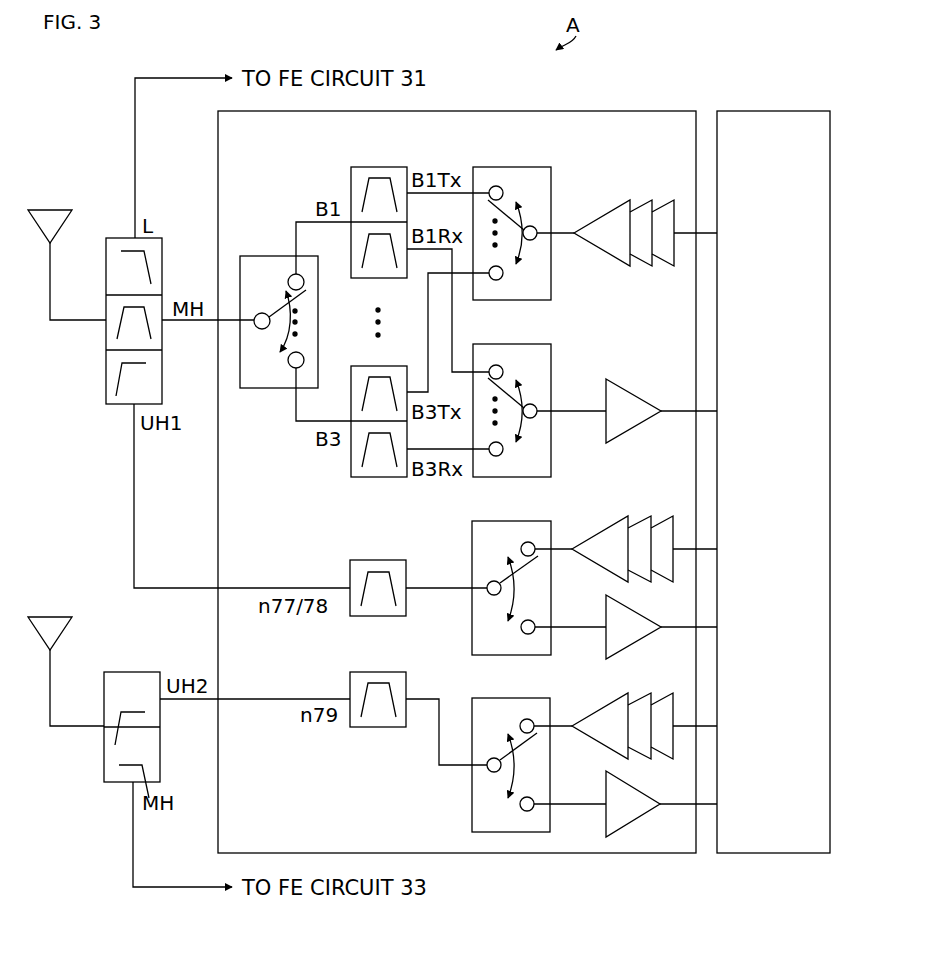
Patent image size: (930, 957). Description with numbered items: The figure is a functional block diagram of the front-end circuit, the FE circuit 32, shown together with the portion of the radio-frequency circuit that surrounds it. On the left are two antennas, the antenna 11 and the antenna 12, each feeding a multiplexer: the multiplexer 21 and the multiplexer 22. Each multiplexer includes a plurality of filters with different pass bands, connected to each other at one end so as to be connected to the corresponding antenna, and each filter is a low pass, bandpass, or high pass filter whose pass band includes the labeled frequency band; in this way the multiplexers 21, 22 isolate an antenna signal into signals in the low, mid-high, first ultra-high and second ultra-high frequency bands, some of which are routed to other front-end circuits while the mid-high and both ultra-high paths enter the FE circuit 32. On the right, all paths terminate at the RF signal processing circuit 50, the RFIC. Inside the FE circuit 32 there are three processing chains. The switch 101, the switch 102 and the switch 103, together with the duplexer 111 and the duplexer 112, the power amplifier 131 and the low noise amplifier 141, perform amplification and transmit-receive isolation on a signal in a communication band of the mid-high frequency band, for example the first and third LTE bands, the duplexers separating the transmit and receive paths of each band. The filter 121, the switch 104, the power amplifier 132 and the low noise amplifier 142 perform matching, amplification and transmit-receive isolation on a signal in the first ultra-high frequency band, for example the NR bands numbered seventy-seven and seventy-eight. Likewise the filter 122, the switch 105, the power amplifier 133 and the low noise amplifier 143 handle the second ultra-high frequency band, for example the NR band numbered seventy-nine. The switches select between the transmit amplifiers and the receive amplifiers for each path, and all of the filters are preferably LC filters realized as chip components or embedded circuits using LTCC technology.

The antenna 11 is at (48, 209).
The antenna 12 is at (48, 614).
The multiplexer 21 is at (158, 238).
The multiplexer 22 is at (124, 672).
The FE circuit 32 is at (632, 111).
The RF signal processing circuit 50 is at (764, 111).
The switch 101 is at (263, 256).
The switch 102 is at (502, 167).
The switch 103 is at (502, 344).
The switch 104 is at (502, 521).
The switch 105 is at (500, 698).
The duplexer 111 is at (372, 167).
The duplexer 112 is at (372, 366).
The filter 121 is at (370, 560).
The filter 122 is at (370, 672).
The power amplifier 131 is at (606, 214).
The power amplifier 132 is at (604, 529).
The power amplifier 133 is at (604, 707).
The low noise amplifier 141 is at (622, 382).
The low noise amplifier 142 is at (622, 598).
The low noise amplifier 143 is at (622, 775).